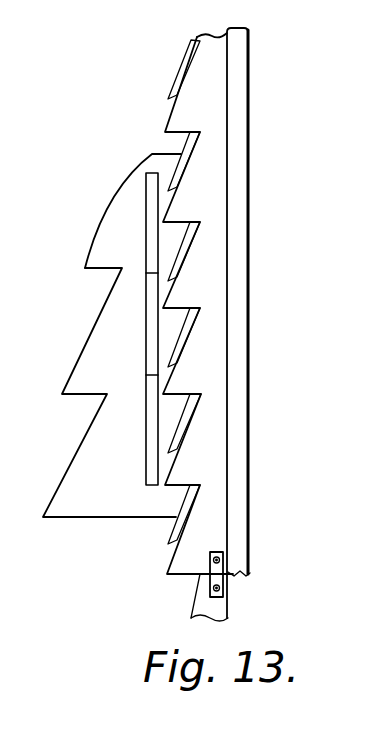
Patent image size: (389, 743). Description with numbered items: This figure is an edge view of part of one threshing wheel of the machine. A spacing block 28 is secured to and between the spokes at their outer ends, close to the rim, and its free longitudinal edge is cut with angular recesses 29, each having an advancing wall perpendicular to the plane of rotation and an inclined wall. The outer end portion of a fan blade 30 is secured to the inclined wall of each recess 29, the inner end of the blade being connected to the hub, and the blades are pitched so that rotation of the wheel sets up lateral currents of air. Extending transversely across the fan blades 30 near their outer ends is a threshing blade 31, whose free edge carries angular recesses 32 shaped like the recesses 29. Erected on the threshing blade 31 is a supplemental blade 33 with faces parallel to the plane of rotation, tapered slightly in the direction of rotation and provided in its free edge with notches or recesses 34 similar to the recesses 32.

The spacing block 28 is at (208, 438).
The angular recess 29 is at (182, 265).
The fan blade 30 is at (183, 77).
The threshing blade 31 is at (142, 178).
The angular recess 32 is at (83, 400).
The supplemental blade 33 is at (146, 338).
The notch or recess 34 is at (145, 276).